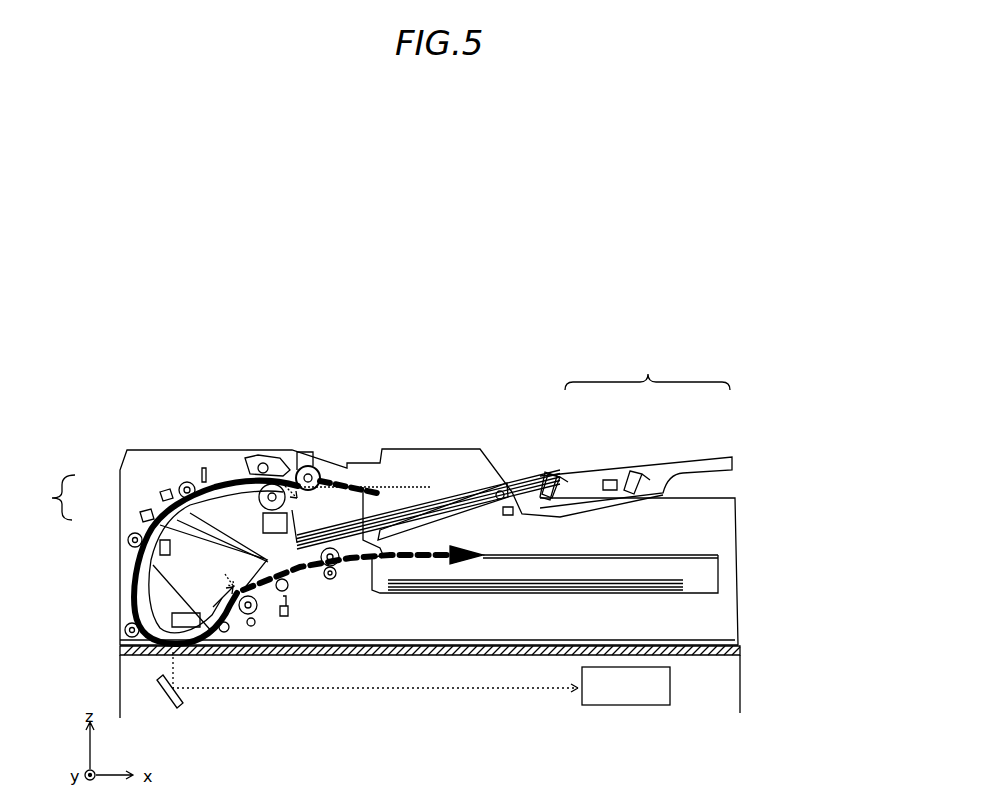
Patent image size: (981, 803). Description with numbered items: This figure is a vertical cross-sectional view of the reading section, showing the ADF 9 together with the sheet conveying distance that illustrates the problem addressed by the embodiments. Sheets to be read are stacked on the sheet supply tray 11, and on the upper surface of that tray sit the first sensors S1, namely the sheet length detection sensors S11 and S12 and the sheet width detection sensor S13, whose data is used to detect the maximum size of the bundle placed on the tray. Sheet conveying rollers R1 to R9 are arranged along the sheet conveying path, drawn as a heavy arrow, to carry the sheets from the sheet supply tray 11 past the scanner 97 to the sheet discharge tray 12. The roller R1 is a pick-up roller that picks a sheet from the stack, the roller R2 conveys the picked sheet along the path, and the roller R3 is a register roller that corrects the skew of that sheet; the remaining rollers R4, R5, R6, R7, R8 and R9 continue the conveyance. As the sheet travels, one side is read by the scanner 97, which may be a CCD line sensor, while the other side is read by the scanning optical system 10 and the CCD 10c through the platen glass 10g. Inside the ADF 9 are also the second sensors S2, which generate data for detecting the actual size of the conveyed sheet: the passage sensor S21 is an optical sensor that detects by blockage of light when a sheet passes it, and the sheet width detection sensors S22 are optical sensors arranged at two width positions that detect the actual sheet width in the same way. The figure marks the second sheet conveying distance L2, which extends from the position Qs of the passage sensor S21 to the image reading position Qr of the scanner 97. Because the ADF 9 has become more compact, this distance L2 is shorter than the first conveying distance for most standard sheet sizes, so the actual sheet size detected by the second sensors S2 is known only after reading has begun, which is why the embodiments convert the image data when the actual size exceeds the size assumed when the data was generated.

The ADF 9 is at (108, 460).
The pick-up roller R1 is at (310, 466).
The sheet conveying roller R2 is at (275, 452).
The register roller R3 is at (195, 482).
The sheet conveying roller R4 is at (133, 540).
The sheet conveying roller R5 is at (131, 630).
The sheet conveying roller R6 is at (224, 633).
The sheet conveying roller R7 is at (255, 620).
The sheet conveying roller R8 is at (292, 620).
The sheet conveying roller R9 is at (346, 583).
The first sensors S1 is at (647, 369).
The sheet length detection sensor S11 is at (553, 473).
The sheet length detection sensor S12 is at (635, 473).
The sheet width detection sensor S13 is at (508, 510).
The second sensors S2 is at (51, 496).
The passage sensor S21 is at (167, 497).
The sheet width detection sensors S22 is at (148, 517).
The sheet supply tray 11 is at (694, 458).
The sheet discharge tray 12 is at (718, 592).
The scanning optical system 10 is at (172, 708).
The CCD 10c is at (614, 705).
The platen glass 10g is at (728, 641).
The scanner 97 is at (180, 590).
The second sheet conveying distance L2 is at (176, 519).
The image reading position Qr is at (229, 581).
The position of the passage sensor Qs is at (303, 501).